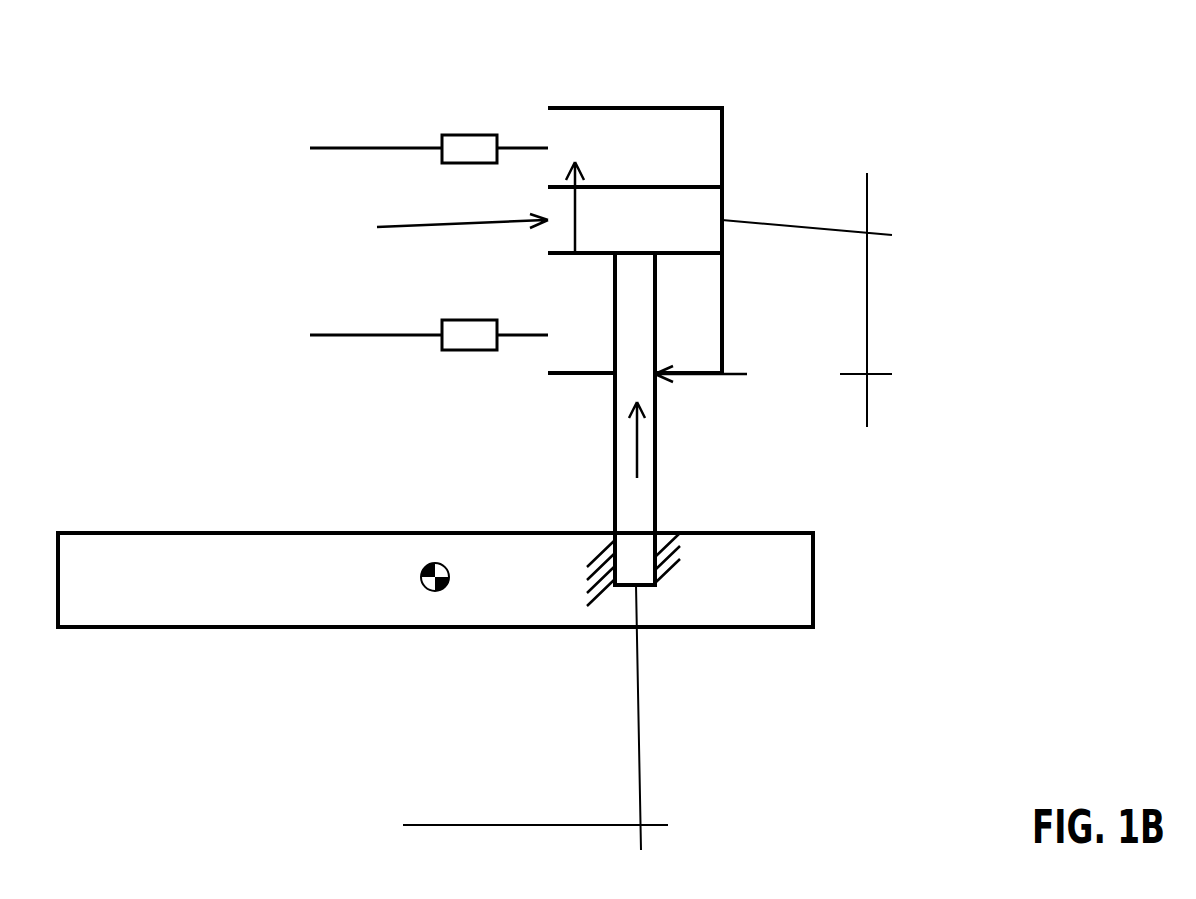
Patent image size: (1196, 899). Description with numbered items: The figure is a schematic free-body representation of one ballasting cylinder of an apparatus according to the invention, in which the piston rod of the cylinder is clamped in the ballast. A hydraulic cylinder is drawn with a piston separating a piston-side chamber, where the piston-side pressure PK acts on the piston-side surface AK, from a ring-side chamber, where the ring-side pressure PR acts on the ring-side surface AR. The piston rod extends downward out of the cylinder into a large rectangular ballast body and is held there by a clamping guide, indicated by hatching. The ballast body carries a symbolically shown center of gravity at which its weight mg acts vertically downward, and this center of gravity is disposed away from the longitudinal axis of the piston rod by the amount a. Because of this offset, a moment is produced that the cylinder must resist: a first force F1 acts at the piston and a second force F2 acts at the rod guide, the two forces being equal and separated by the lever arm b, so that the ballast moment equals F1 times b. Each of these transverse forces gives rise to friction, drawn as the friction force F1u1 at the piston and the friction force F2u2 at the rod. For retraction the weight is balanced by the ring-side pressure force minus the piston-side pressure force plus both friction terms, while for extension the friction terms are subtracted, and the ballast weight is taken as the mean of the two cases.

The piston-side surface AK is at (695, 187).
The ring-side surface AR is at (577, 254).
The piston-side pressure PK is at (398, 148).
The ring-side pressure PR is at (398, 334).
The first force F1 is at (438, 214).
The first friction force F1u1 is at (641, 211).
The second force F2 is at (737, 389).
The second friction force F2u2 is at (642, 467).
The lever arm b is at (820, 300).
The center of gravity offset a is at (535, 717).
The ballast weight mg is at (435, 605).